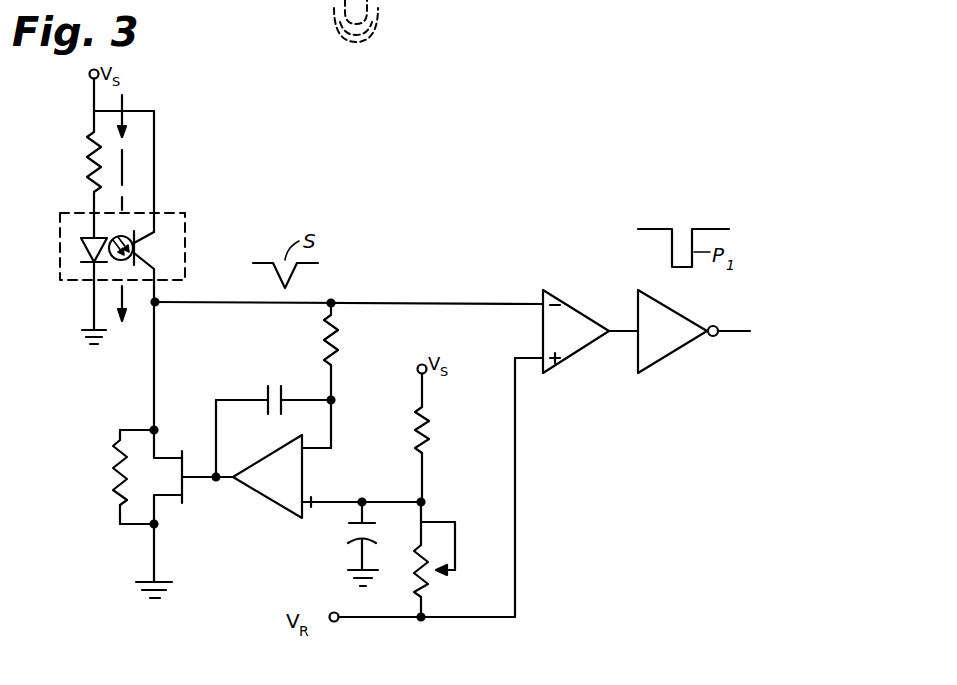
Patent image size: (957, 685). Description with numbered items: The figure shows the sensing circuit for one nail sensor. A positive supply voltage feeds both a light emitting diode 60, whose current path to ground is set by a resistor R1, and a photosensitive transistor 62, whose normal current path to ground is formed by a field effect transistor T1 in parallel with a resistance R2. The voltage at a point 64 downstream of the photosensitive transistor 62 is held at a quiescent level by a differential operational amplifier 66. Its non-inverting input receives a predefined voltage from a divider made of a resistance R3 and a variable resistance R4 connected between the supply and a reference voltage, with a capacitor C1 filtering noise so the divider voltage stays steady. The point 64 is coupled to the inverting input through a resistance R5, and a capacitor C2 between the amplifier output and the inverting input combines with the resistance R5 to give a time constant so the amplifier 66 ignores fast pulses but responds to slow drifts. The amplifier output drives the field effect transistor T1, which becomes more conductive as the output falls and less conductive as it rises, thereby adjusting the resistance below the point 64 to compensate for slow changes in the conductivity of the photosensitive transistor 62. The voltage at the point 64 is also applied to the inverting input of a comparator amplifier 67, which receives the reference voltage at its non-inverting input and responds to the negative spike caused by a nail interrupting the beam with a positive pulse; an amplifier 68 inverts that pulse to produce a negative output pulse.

The light emitting diode 60 is at (80, 243).
The photosensitive transistor 62 is at (152, 242).
The point 64 is at (158, 305).
The differential operational amplifier 66 is at (304, 474).
The comparator amplifier 67 is at (578, 314).
The amplifier 68 is at (655, 290).
The resistor R1 is at (88, 155).
The resistance R2 is at (101, 477).
The resistance R3 is at (430, 433).
The variable resistance R4 is at (434, 588).
The resistance R5 is at (338, 338).
The capacitor C1 is at (345, 529).
The capacitor C2 is at (282, 388).
The field effect transistor T1 is at (162, 455).